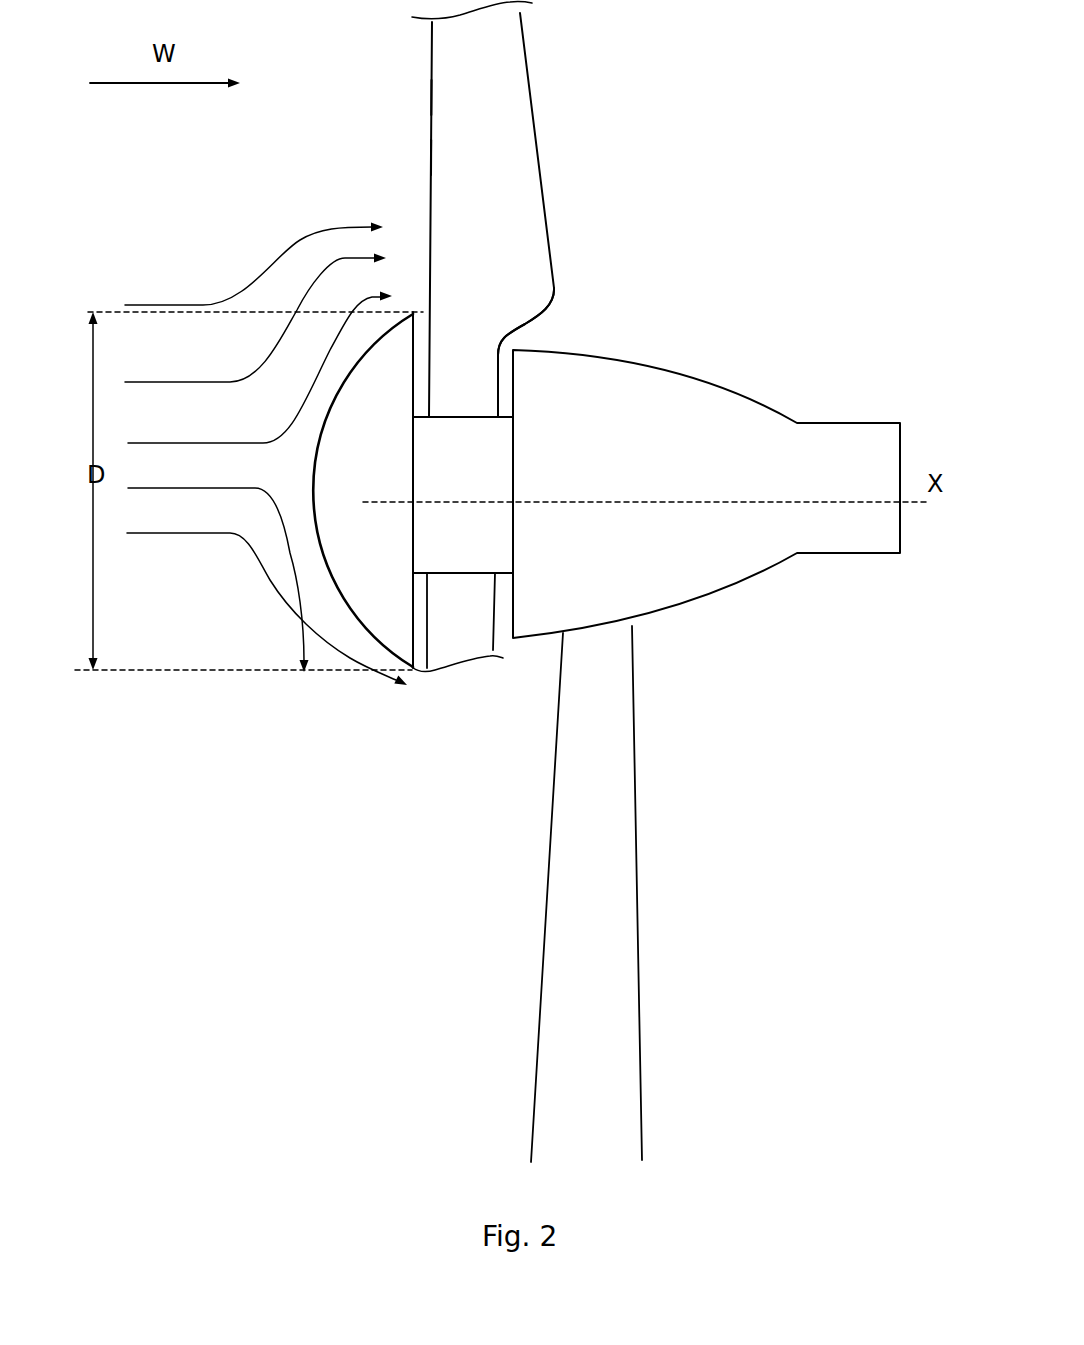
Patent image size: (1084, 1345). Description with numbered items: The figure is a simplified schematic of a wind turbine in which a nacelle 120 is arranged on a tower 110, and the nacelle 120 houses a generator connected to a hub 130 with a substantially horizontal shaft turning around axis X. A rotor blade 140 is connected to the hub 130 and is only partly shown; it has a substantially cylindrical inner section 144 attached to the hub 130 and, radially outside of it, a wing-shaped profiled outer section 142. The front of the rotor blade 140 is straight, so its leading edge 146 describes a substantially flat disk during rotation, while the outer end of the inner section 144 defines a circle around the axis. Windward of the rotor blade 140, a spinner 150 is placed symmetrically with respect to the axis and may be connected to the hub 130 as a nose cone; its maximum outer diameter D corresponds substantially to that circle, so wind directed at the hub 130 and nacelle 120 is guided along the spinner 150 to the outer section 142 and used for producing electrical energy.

The tower 110 is at (627, 762).
The nacelle 120 is at (704, 481).
The hub 130 is at (486, 497).
The rotor blade 140 is at (520, 143).
The outer section 142 is at (438, 154).
The inner section 144 is at (487, 399).
The leading edge 146 is at (432, 98).
The spinner 150 is at (381, 489).